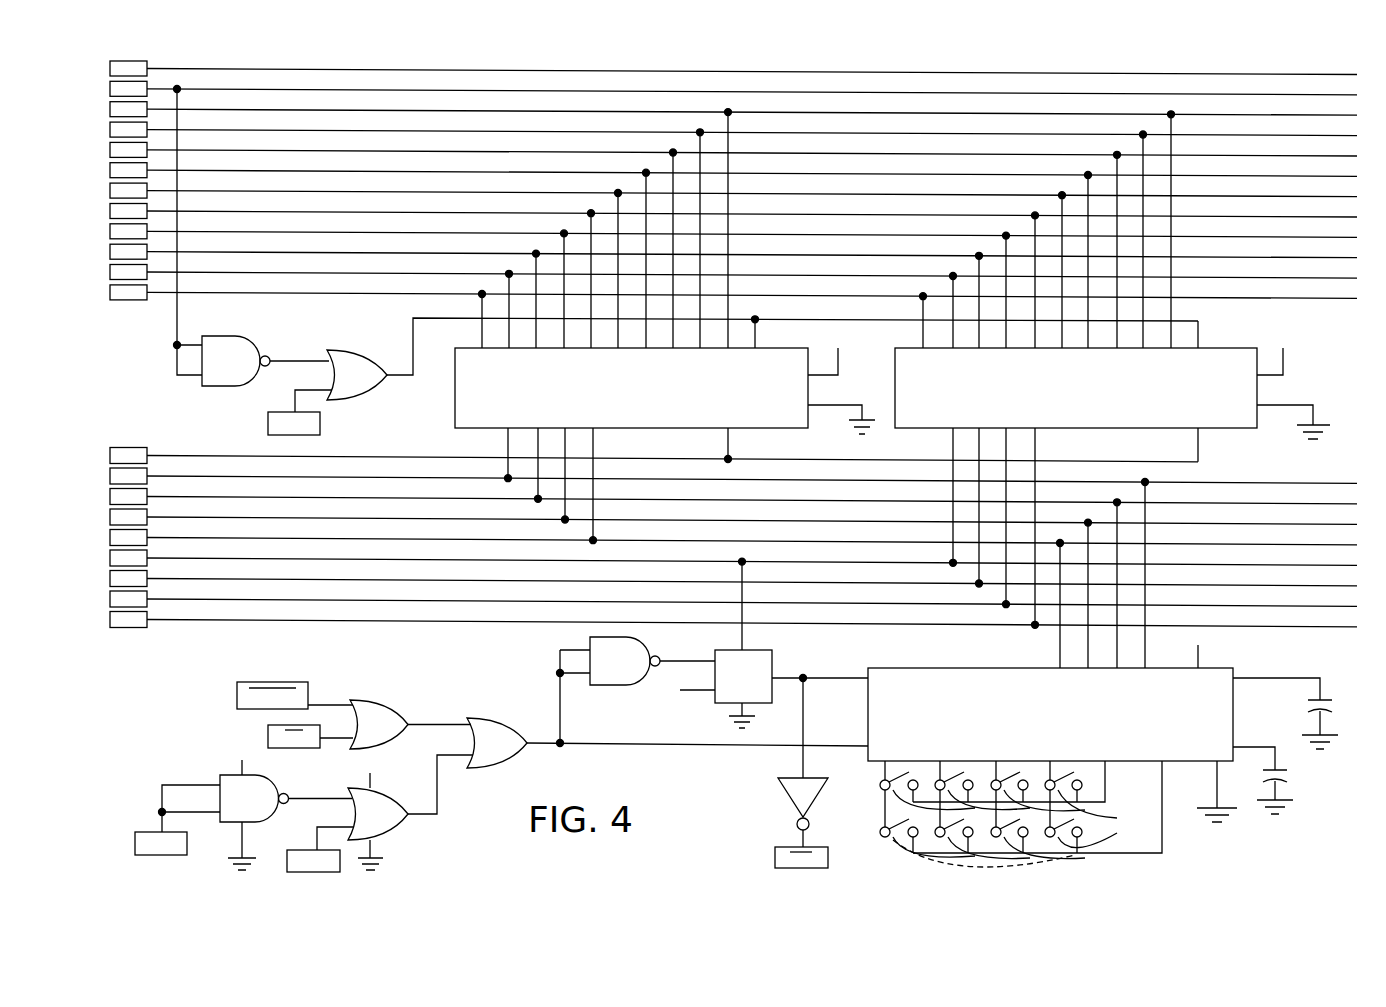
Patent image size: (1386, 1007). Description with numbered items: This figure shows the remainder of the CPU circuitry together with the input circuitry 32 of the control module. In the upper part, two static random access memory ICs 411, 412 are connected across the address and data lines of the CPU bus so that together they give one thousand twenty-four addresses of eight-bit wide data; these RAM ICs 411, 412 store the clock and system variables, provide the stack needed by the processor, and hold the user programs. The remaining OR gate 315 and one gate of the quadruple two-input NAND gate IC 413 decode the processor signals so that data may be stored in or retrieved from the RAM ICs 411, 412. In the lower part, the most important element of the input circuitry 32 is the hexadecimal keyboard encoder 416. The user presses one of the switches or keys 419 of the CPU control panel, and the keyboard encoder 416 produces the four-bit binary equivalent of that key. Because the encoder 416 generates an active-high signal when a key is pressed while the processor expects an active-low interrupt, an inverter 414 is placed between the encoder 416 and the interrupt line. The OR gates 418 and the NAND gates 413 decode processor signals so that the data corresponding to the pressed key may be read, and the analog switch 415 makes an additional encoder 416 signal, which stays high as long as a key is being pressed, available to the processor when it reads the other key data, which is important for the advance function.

The input circuitry 32 is at (590, 67).
The static random access memory IC 411 is at (652, 398).
The static random access memory IC 412 is at (1094, 398).
The quadruple two-input NAND gate IC 413 is at (234, 352).
The OR gate 315 is at (352, 366).
The OR gates 418 is at (389, 763).
The analog switch 415 is at (735, 663).
The inverter 414 is at (795, 803).
The hexadecimal keyboard encoder 416 is at (1060, 724).
The switches or keys 419 is at (1085, 856).